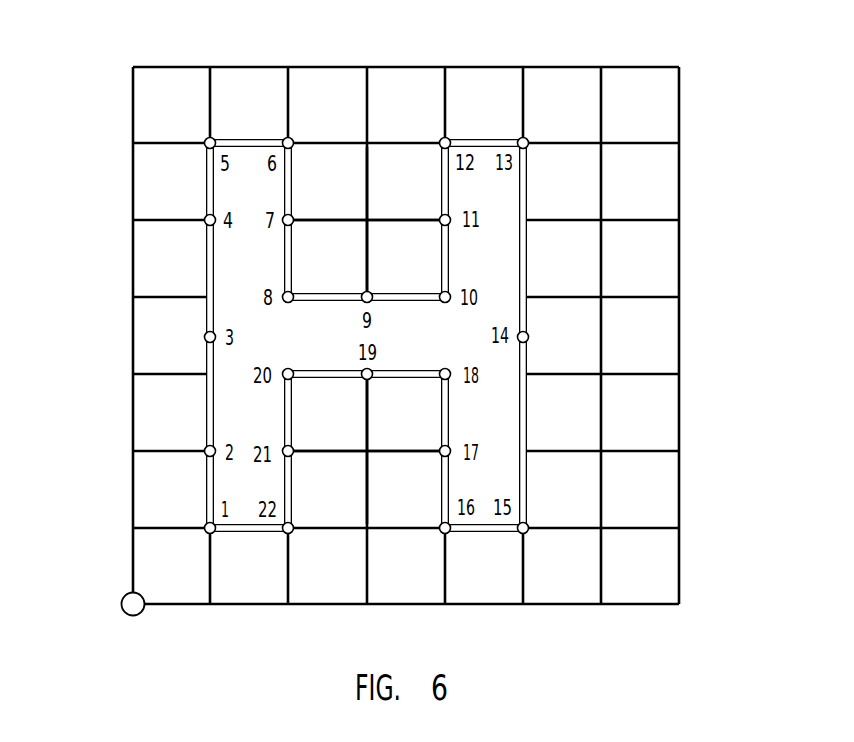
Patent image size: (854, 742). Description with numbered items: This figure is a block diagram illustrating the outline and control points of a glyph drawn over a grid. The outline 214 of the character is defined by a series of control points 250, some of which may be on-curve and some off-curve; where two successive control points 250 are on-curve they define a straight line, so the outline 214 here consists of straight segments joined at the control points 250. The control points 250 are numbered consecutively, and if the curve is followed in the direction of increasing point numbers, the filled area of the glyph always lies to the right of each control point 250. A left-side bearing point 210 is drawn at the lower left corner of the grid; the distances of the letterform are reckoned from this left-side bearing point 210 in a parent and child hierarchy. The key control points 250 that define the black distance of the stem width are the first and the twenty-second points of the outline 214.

The left-side bearing point 210 is at (121, 606).
The outline 214 is at (525, 246).
The control points 250 is at (206, 140).